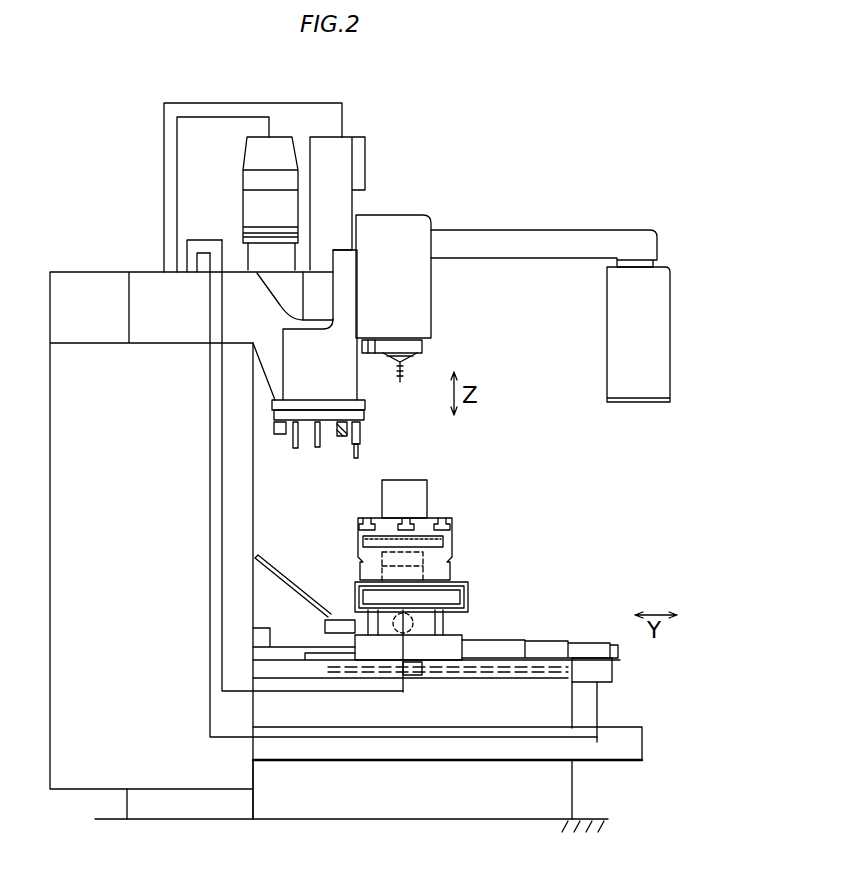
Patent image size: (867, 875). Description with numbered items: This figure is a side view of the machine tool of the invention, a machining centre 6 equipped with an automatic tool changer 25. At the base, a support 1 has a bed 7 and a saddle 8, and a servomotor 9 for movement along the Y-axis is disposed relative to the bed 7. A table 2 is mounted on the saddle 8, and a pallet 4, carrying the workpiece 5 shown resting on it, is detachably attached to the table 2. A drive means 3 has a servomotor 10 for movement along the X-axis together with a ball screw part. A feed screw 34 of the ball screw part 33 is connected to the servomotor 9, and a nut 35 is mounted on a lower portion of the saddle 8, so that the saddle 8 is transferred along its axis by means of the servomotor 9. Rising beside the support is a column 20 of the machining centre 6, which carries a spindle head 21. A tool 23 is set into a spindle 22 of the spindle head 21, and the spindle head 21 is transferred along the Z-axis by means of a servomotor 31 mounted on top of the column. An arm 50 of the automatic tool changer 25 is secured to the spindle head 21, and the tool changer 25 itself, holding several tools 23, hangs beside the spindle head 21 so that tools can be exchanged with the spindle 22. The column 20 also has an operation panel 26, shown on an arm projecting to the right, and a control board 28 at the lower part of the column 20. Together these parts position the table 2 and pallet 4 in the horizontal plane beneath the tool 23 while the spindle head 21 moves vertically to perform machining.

The support 1 is at (572, 786).
The table 2 is at (463, 582).
The drive means 3 is at (378, 656).
The pallet 4 is at (435, 517).
The workpiece 5 is at (430, 497).
The machining centre 6 is at (445, 197).
The bed 7 is at (512, 820).
The saddle 8 is at (428, 622).
The servomotor 9 is at (607, 682).
The servomotor 10 is at (397, 618).
The column 20 is at (323, 461).
The spindle head 21 is at (425, 295).
The spindle 22 is at (425, 348).
The tool 23 is at (355, 458).
The automatic tool changer 25 is at (350, 370).
The operation panel 26 is at (615, 340).
The control board 28 is at (83, 763).
The servomotor 31 is at (247, 157).
The ball screw part 33 is at (459, 704).
The feed screw 34 is at (518, 673).
The nut 35 is at (418, 675).
The arm 50 is at (365, 338).